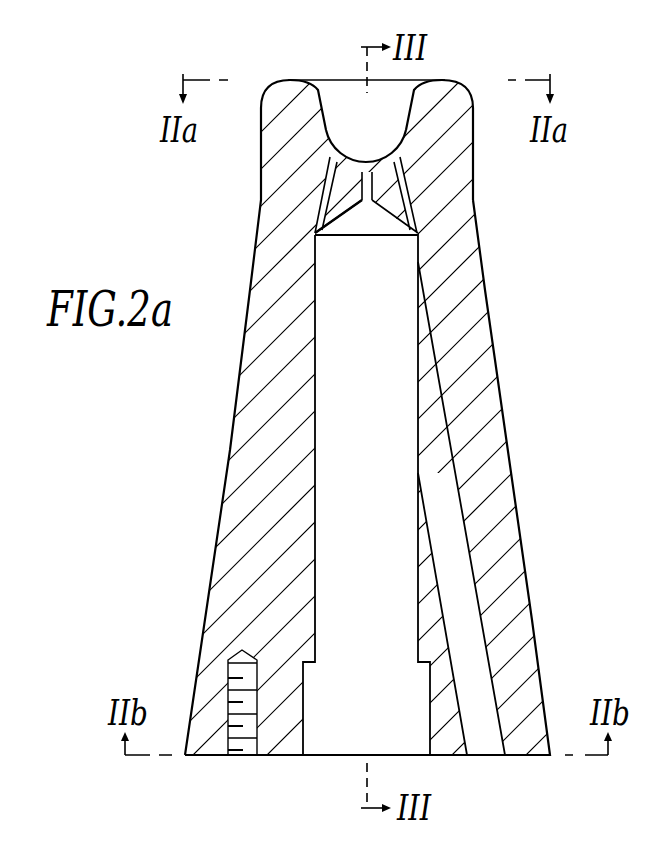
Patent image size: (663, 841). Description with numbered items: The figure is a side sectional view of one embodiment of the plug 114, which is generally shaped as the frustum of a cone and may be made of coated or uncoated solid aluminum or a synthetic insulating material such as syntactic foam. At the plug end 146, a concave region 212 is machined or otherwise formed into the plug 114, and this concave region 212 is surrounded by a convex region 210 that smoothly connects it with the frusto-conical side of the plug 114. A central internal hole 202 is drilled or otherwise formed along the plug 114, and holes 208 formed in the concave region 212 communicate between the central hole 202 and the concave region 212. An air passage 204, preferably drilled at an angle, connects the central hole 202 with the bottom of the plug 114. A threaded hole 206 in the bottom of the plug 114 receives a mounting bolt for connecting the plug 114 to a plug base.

The plug 114 is at (490, 395).
The plug end 146 is at (473, 83).
The central internal hole 202 is at (322, 508).
The air passage 204 is at (472, 580).
The threaded hole 206 is at (252, 748).
The holes 208 is at (397, 155).
The convex region 210 is at (290, 79).
The concave region 212 is at (343, 92).